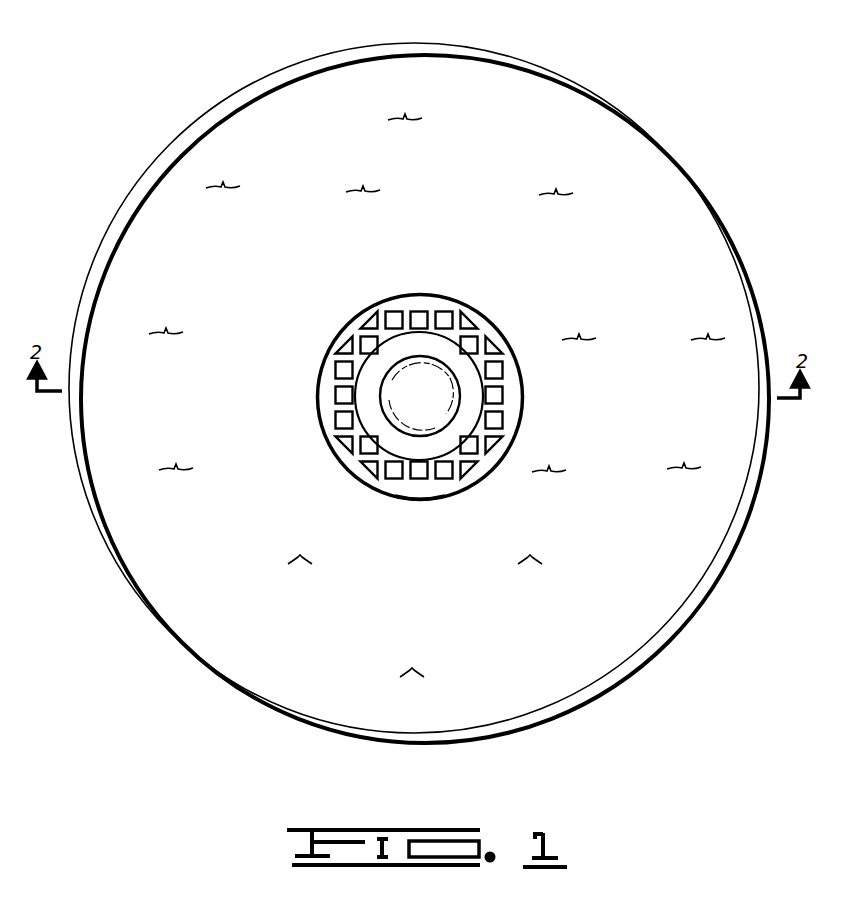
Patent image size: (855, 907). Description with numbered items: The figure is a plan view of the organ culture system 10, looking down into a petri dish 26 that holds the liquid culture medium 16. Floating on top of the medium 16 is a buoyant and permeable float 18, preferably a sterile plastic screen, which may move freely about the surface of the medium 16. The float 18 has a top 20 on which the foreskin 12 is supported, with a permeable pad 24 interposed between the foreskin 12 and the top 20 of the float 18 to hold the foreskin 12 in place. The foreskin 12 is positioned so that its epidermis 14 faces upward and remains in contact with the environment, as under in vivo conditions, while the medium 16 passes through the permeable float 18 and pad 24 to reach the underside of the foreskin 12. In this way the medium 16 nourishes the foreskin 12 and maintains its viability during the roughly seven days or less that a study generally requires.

The organ culture system 10 is at (665, 125).
The foreskin 12 is at (393, 362).
The epidermis 14 is at (420, 390).
The medium 16 is at (288, 135).
The float 18 is at (521, 403).
The top 20 is at (407, 465).
The permeable pad 24 is at (422, 339).
The petri dish 26 is at (677, 638).